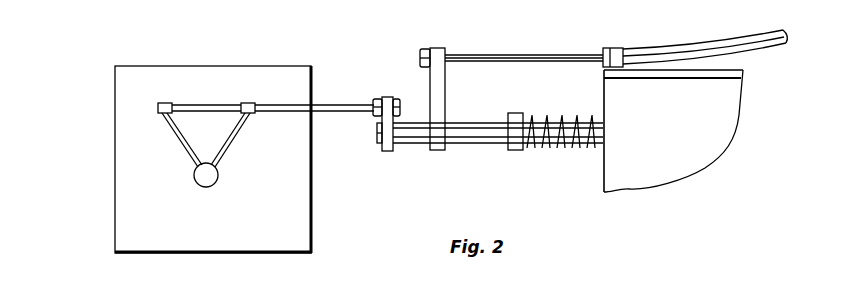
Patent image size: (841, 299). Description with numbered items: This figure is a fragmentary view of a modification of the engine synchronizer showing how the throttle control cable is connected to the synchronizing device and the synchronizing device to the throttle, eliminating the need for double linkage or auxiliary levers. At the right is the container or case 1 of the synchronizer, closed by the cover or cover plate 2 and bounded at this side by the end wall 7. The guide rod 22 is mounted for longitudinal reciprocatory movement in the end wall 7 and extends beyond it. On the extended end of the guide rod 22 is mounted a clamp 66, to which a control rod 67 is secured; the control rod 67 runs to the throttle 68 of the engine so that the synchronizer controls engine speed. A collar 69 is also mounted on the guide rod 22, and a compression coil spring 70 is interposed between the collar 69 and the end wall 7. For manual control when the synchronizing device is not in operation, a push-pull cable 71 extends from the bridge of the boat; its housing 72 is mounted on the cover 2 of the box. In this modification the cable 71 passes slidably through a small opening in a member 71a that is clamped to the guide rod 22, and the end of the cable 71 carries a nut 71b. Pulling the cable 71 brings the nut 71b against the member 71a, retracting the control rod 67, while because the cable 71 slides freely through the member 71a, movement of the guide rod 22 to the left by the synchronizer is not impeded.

The container or case 1 is at (713, 145).
The cover or cover plate 2 is at (737, 65).
The end wall 7 is at (603, 170).
The guide rod 22 is at (487, 143).
The clamp 66 is at (388, 151).
The control rod 67 is at (344, 105).
The throttle 68 is at (148, 157).
The collar 69 is at (515, 120).
The compression coil spring 70 is at (562, 118).
The push-pull cable 71 is at (530, 55).
The member 71a is at (445, 94).
The nut 71b is at (424, 48).
The housing 72 is at (658, 50).